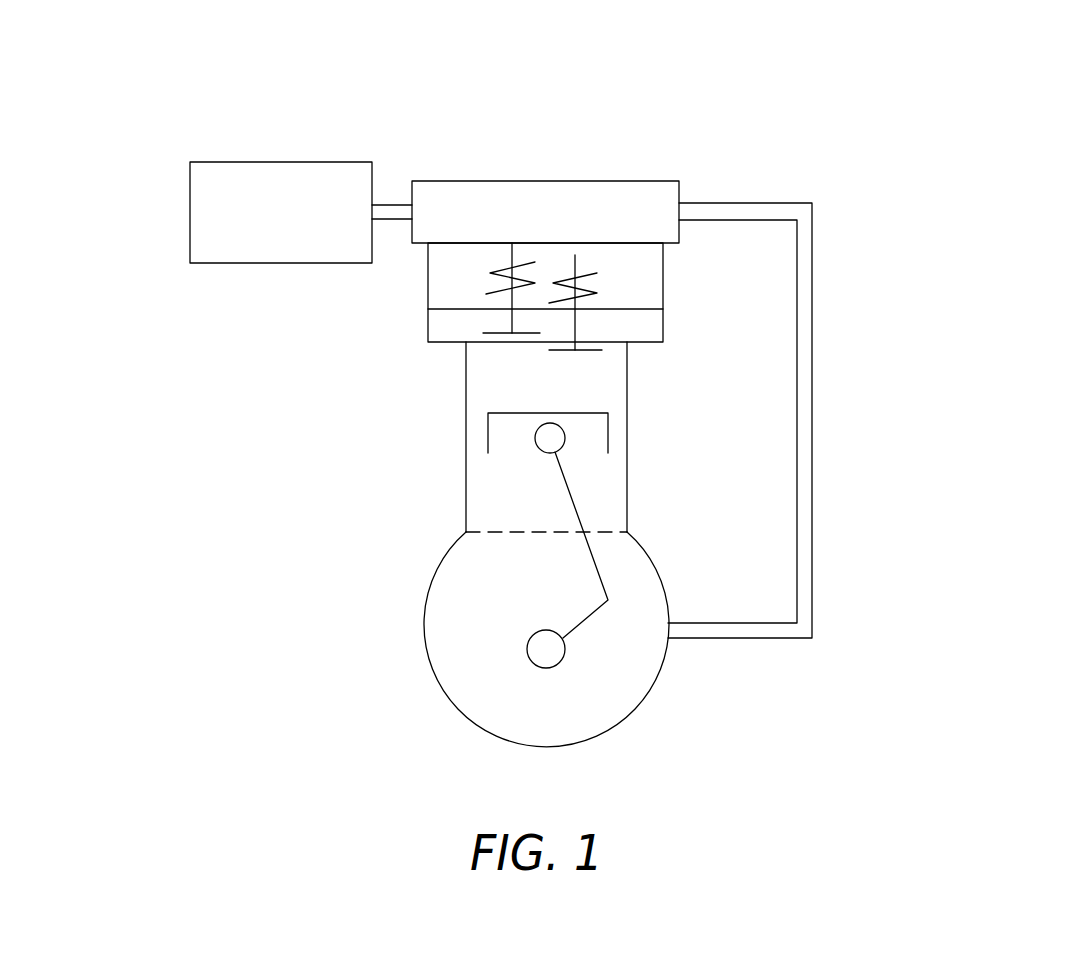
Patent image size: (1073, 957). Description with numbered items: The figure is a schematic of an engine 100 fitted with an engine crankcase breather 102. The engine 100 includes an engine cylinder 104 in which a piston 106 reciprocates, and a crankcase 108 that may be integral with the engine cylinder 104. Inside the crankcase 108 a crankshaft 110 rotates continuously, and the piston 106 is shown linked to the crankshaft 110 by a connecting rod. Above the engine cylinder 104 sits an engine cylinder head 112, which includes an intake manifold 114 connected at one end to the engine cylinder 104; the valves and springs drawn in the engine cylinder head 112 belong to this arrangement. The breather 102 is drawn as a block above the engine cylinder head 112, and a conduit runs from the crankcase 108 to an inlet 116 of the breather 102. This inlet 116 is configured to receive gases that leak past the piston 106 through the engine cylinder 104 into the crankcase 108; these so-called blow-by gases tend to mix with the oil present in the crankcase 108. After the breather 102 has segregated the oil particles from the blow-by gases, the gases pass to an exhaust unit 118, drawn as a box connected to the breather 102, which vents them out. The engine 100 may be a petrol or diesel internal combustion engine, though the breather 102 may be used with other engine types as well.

The engine 100 is at (940, 133).
The engine crankcase breather 102 is at (596, 176).
The engine cylinder 104 is at (627, 443).
The piston 106 is at (488, 433).
The crankcase 108 is at (423, 628).
The crankshaft 110 is at (550, 655).
The engine cylinder head 112 is at (427, 273).
The intake manifold 114 is at (665, 323).
The inlet 116 is at (680, 212).
The exhaust unit 118 is at (190, 215).